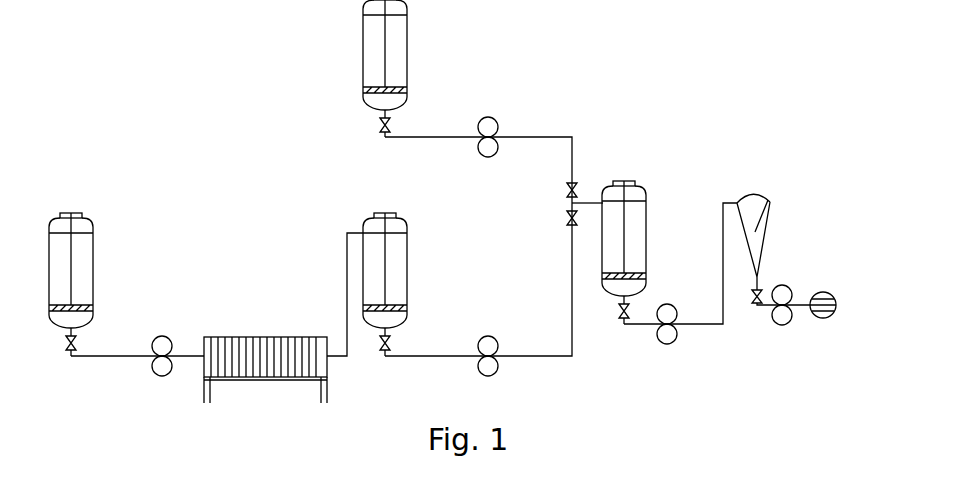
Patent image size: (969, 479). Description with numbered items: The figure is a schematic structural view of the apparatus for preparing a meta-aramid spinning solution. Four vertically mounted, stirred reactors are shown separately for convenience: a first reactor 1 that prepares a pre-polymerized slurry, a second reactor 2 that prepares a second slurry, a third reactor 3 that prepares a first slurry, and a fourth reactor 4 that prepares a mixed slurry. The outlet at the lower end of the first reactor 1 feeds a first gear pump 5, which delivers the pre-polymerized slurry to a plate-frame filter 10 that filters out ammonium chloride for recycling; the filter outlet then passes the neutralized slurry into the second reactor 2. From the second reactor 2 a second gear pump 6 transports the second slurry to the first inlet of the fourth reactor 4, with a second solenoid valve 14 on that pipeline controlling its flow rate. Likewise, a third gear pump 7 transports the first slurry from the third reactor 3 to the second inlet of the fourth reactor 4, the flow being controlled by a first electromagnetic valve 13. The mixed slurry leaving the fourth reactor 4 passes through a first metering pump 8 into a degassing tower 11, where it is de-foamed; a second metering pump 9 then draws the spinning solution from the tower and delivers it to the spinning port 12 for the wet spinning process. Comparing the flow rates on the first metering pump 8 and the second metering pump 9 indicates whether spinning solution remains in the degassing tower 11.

The first reactor 1 is at (80, 302).
The second reactor 2 is at (395, 300).
The third reactor 3 is at (393, 80).
The fourth reactor 4 is at (632, 270).
The first gear pump 5 is at (166, 335).
The second gear pump 6 is at (490, 336).
The third gear pump 7 is at (490, 117).
The first metering pump 8 is at (668, 304).
The second metering pump 9 is at (783, 285).
The plate-frame filter 10 is at (213, 338).
The degassing tower 11 is at (770, 202).
The spinning port 12 is at (830, 292).
The first electromagnetic valve 13 is at (572, 188).
The second solenoid valve 14 is at (570, 220).